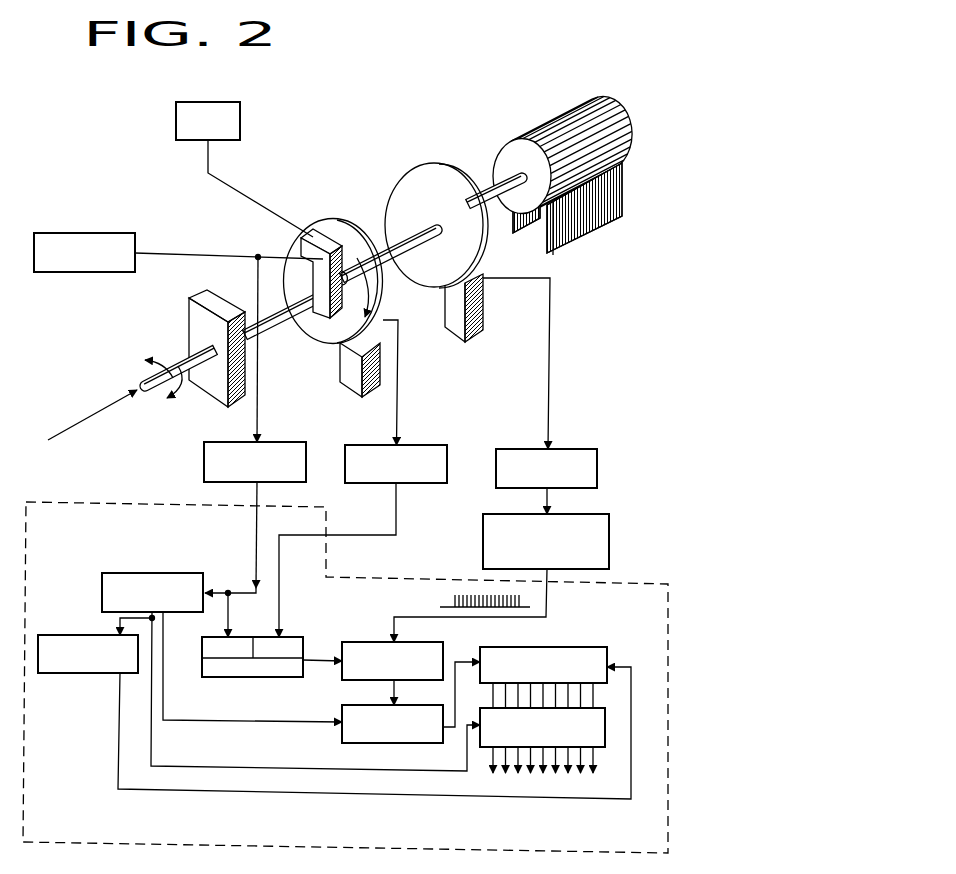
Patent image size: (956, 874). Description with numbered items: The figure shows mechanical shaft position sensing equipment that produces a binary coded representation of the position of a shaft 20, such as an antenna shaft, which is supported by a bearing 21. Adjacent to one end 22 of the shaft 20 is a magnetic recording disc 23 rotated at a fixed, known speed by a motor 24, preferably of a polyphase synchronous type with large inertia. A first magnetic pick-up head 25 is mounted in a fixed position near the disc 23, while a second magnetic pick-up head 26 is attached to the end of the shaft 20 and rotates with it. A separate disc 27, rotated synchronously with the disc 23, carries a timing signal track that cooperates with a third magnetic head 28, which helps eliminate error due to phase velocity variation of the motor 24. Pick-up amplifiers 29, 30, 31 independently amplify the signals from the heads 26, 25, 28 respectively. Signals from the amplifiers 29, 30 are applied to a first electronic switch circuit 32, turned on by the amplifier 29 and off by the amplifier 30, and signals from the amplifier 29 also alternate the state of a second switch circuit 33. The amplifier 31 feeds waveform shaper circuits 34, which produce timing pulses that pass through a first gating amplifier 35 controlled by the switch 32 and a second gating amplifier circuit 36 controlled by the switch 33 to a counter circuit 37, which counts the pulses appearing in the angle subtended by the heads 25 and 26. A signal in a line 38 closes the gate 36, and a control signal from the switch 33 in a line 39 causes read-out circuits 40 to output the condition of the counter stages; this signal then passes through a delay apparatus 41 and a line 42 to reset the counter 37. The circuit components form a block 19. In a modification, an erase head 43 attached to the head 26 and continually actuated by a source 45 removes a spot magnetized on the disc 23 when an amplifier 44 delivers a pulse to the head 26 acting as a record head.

The block 19 is at (55, 502).
The shaft 20 is at (180, 358).
The bearing 21 is at (197, 295).
The end of shaft 22 is at (287, 315).
The magnetic recording disc 23 is at (323, 218).
The motor 24 is at (533, 123).
The first magnetic pick-up head 25 is at (340, 360).
The second magnetic pick-up head 26 is at (337, 243).
The separate disc 27 is at (423, 165).
The third magnetic head 28 is at (445, 307).
The pick-up amplifier 29 is at (237, 442).
The pick-up amplifier 30 is at (377, 445).
The pick-up amplifier 31 is at (523, 448).
The first electronic switch circuit 32 is at (238, 637).
The second switch circuit 33 is at (135, 572).
The waveform shaper circuits 34 is at (518, 513).
The first gating amplifier 35 is at (375, 640).
The second gating amplifier circuit 36 is at (373, 703).
The counter circuit 37 is at (512, 643).
The line 38 is at (232, 720).
The line 39 is at (233, 765).
The read-out circuits 40 is at (607, 733).
The delay apparatus 41 is at (63, 633).
The line 42 is at (232, 790).
The erase head 43 is at (303, 248).
The amplifier 44 is at (68, 232).
The source 45 is at (244, 169).